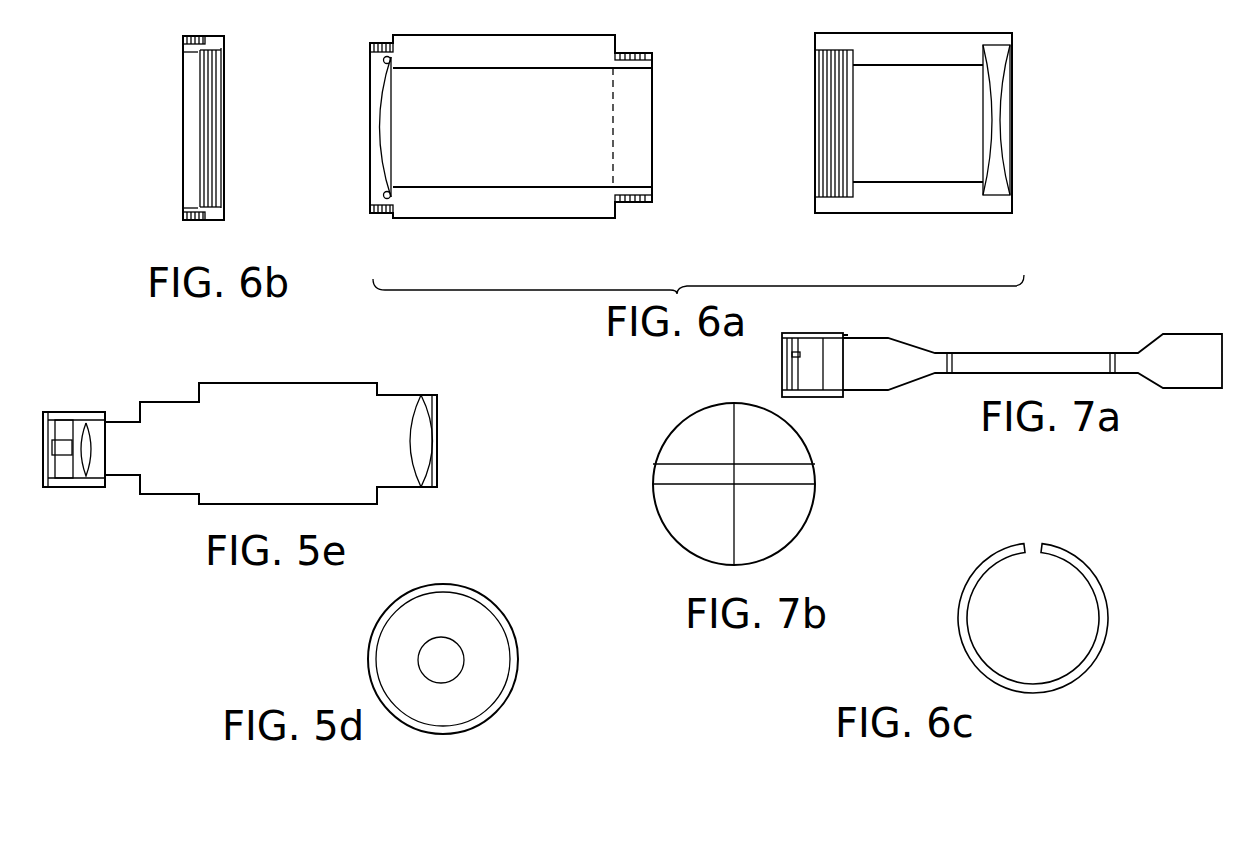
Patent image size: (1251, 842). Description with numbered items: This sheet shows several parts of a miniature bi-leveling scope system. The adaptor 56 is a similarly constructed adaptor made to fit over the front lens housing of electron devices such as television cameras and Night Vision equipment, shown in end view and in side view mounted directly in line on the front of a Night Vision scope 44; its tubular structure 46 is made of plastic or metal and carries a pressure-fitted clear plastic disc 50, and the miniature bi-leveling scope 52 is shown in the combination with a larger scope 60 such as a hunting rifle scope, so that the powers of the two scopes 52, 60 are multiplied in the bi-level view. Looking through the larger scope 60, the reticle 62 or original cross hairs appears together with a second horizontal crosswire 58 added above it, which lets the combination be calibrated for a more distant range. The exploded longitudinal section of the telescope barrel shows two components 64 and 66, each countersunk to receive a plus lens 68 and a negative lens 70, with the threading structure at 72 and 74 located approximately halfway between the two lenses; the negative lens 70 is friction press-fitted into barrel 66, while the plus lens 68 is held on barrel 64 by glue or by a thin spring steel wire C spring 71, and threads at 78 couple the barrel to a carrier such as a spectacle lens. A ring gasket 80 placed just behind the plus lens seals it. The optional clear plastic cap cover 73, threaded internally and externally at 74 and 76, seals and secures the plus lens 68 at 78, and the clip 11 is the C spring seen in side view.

In FIG. 6C, the snap ring 11 is at (1093, 572).
In FIG. 5E, the Night Vision scope 44 is at (277, 383).
In FIG. 7A, the tubular structure 46 is at (840, 337).
In FIG. 7A, the clear plastic disc 50 is at (782, 390).
In FIG. 7A, the bi-leveling scope 52 is at (790, 356).
In FIG. 5E, the adaptor 56 is at (86, 412).
In FIG. 5D, the adaptor 56 is at (518, 664).
In FIG. 7B, the second horizontal crosswire 58 is at (775, 462).
In FIG. 7A, the larger scope 60 is at (1010, 353).
In FIG. 7B, the larger scope 60 is at (682, 425).
In FIG. 7B, the reticle 62 is at (737, 486).
In FIG. 6A, the barrel component 64 is at (536, 218).
In FIG. 6A, the barrel component 66 is at (929, 214).
In FIG. 6A, the plus lens 68 is at (378, 118).
In FIG. 6A, the negative lens 70 is at (1003, 140).
In FIG. 6A, the C spring 71 is at (383, 194).
In FIG. 6A, the threading structure 72 is at (635, 203).
In FIG. 6B, the cap cover 73 is at (183, 116).
In FIG. 6B, the threading structure 74 is at (203, 222).
In FIG. 6A, the threading structure 74 is at (838, 198).
In FIG. 6B, the external threads 76 is at (224, 58).
In FIG. 6A, the threads 78 is at (390, 216).
In FIG. 6A, the ring gasket 80 is at (394, 196).